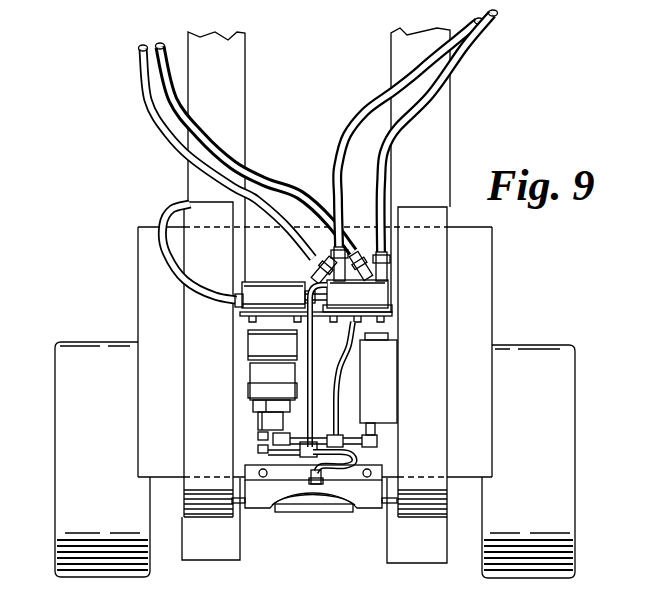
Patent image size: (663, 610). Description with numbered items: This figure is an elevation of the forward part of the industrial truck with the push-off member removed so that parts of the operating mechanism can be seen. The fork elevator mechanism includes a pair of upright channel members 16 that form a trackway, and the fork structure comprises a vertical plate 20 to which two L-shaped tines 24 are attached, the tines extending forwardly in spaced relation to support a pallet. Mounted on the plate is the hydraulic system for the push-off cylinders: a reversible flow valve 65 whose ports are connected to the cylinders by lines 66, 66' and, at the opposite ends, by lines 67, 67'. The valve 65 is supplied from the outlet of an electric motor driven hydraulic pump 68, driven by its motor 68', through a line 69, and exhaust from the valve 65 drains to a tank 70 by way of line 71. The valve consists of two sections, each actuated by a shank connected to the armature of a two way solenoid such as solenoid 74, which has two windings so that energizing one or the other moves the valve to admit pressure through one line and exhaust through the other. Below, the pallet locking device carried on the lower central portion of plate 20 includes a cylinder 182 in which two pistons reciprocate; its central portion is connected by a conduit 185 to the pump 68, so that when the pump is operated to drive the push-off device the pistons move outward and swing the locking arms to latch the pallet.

The upright channel members 16 is at (413, 53).
The vertical plate 20 is at (148, 302).
The L-shaped tines 24 is at (452, 508).
The reversible flow valve 65 is at (373, 300).
The line 66 is at (265, 162).
The line 66' is at (447, 145).
The line 67 is at (222, 165).
The line 67' is at (407, 149).
The hydraulic pump 68 is at (242, 426).
The motor 68' is at (246, 365).
The line 69 is at (313, 357).
The tank 70 is at (392, 372).
The line 71 is at (352, 392).
The two way solenoid 74 is at (274, 290).
The cylinder 182 is at (333, 503).
The conduit 185 is at (350, 460).